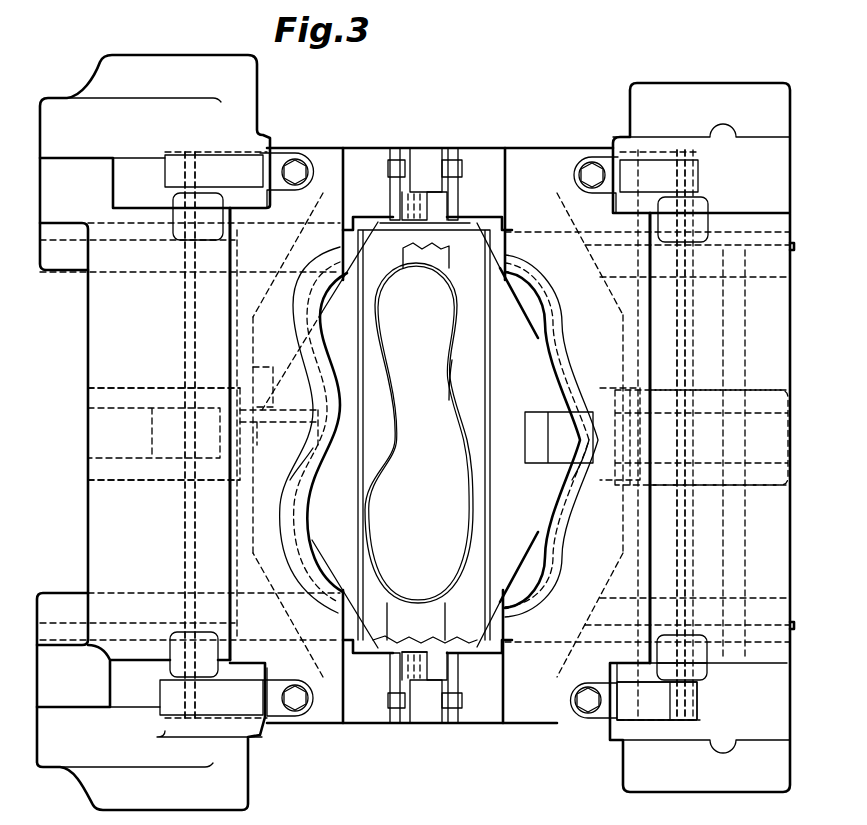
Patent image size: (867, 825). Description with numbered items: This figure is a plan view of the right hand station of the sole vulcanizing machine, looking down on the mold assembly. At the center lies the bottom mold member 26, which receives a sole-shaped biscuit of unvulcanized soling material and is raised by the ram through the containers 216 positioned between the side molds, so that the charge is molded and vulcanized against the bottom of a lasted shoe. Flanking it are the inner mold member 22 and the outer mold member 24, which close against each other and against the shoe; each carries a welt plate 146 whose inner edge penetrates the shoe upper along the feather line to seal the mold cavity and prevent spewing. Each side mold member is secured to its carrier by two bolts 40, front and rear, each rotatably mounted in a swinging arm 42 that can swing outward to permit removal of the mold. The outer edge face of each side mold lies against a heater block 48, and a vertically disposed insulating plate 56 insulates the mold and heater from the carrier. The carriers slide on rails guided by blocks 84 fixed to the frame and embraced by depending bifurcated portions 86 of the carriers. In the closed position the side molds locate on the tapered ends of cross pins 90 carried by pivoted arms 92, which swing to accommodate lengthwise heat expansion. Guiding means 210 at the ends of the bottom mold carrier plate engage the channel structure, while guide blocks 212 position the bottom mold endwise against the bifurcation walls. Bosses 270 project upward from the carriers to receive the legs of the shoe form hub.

The inner mold member 22 is at (324, 496).
The outer mold member 24 is at (546, 497).
The bottom mold member 26 is at (445, 520).
The bolt 40 is at (297, 168).
The swinging arm 42 is at (648, 702).
The heater block 48 is at (200, 500).
The vertically disposed insulating plate 56 is at (195, 536).
The block 84 is at (150, 438).
The bifurcated portion 86 is at (128, 387).
The cross pin 90 is at (455, 170).
The arm 92 is at (422, 165).
The welt plate 146 is at (326, 372).
The guiding means 210 is at (451, 640).
The guide block 212 is at (261, 403).
The container 216 is at (458, 358).
The boss 270 is at (185, 207).